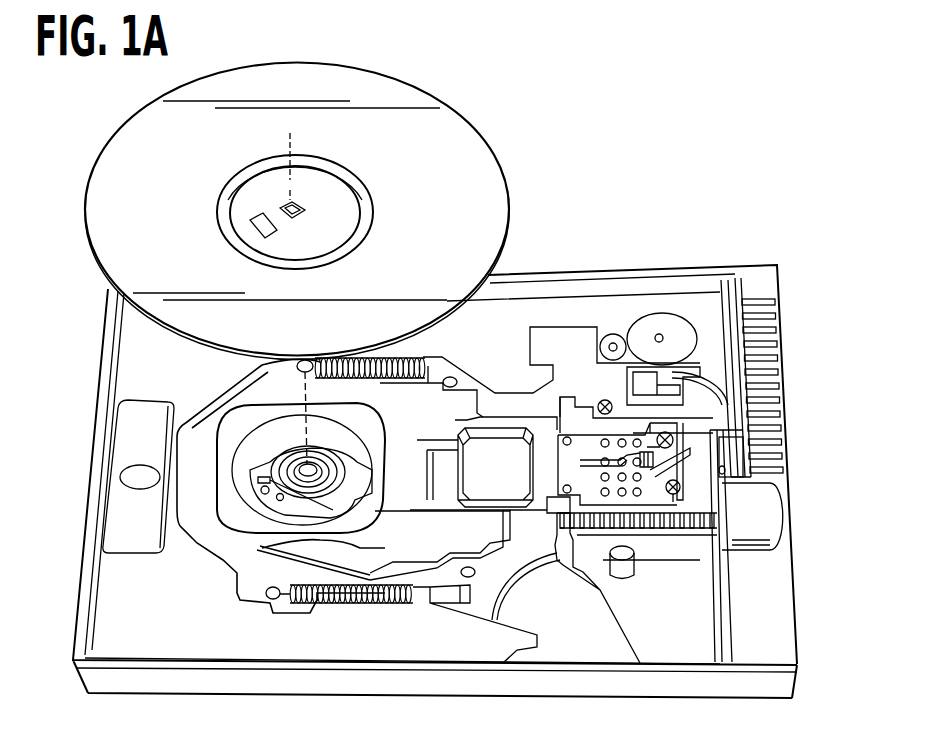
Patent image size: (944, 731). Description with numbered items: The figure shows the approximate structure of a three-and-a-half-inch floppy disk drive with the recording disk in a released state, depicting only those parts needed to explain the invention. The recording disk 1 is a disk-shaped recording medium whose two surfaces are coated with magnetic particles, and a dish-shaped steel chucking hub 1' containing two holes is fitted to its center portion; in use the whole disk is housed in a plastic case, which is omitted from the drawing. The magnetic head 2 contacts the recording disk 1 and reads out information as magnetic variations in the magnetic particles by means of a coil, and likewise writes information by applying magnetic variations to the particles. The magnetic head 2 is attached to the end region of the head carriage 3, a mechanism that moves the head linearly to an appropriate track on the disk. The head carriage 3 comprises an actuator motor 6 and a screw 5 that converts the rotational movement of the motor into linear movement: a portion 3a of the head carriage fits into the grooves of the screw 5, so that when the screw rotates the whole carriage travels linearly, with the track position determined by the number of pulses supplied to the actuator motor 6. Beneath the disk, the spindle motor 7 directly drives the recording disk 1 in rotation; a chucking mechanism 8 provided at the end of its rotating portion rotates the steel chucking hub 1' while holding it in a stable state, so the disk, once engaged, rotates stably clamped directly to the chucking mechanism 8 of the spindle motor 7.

The recording disk 1 is at (311, 211).
The chucking hub 1' is at (378, 201).
The magnetic head 2 is at (497, 458).
The head carriage 3 is at (577, 443).
The portion of the head carriage 3a is at (673, 513).
The screw 5 is at (640, 528).
The actuator motor 6 is at (770, 510).
The spindle motor 7 is at (245, 432).
The chucking mechanism 8 is at (262, 495).